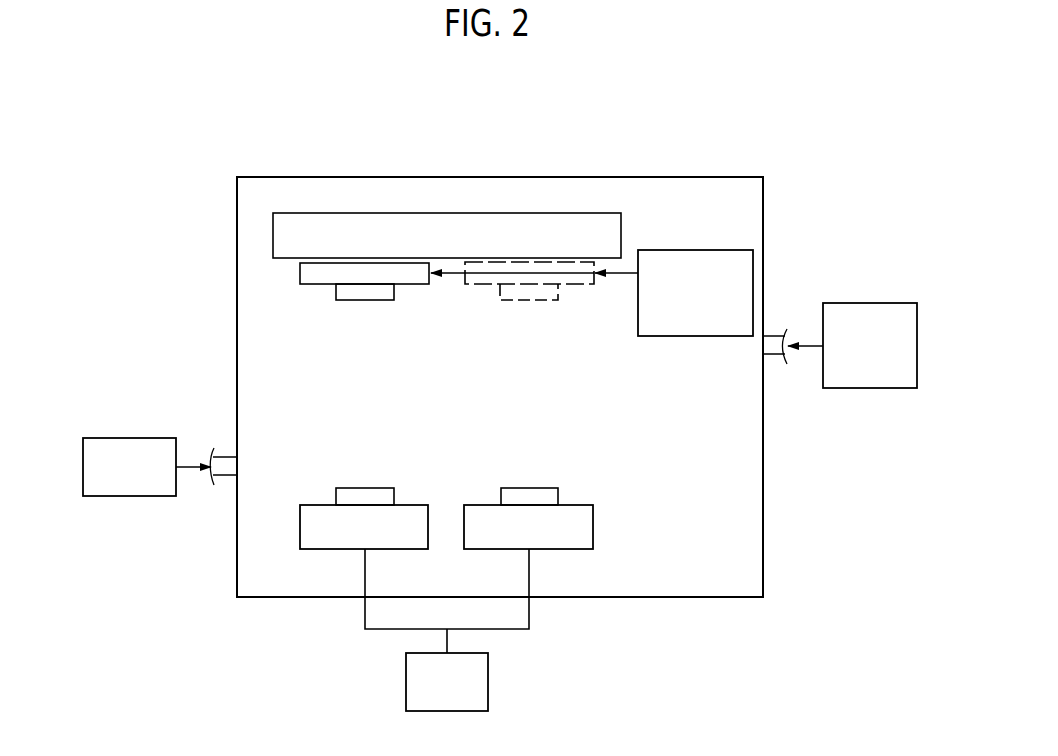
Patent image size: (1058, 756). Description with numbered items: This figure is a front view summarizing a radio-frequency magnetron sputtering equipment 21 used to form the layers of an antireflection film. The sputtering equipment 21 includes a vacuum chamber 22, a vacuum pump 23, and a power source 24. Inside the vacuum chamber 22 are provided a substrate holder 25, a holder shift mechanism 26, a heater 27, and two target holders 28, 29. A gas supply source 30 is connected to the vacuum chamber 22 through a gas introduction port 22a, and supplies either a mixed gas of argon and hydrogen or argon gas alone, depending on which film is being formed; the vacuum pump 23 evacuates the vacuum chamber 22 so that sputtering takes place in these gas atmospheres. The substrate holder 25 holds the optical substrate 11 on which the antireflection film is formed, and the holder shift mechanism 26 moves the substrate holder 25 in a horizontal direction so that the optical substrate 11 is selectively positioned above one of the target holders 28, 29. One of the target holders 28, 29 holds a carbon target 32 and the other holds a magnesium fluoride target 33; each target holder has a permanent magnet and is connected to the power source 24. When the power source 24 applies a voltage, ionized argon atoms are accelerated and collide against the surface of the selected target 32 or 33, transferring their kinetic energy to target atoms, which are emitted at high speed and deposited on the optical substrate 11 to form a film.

The sputtering equipment 21 is at (656, 175).
The vacuum chamber 22 is at (763, 496).
The gas introduction port 22a is at (773, 336).
The vacuum pump 23 is at (153, 438).
The power source 24 is at (488, 682).
The substrate holder 25 is at (305, 278).
The holder shift mechanism 26 is at (697, 250).
The heater 27 is at (555, 222).
The target holder 28 is at (420, 508).
The target holder 29 is at (585, 508).
The gas supply source 30 is at (895, 303).
The carbon target 32 is at (382, 492).
The MgF2 target 33 is at (547, 492).
The optical substrate 11 is at (347, 297).